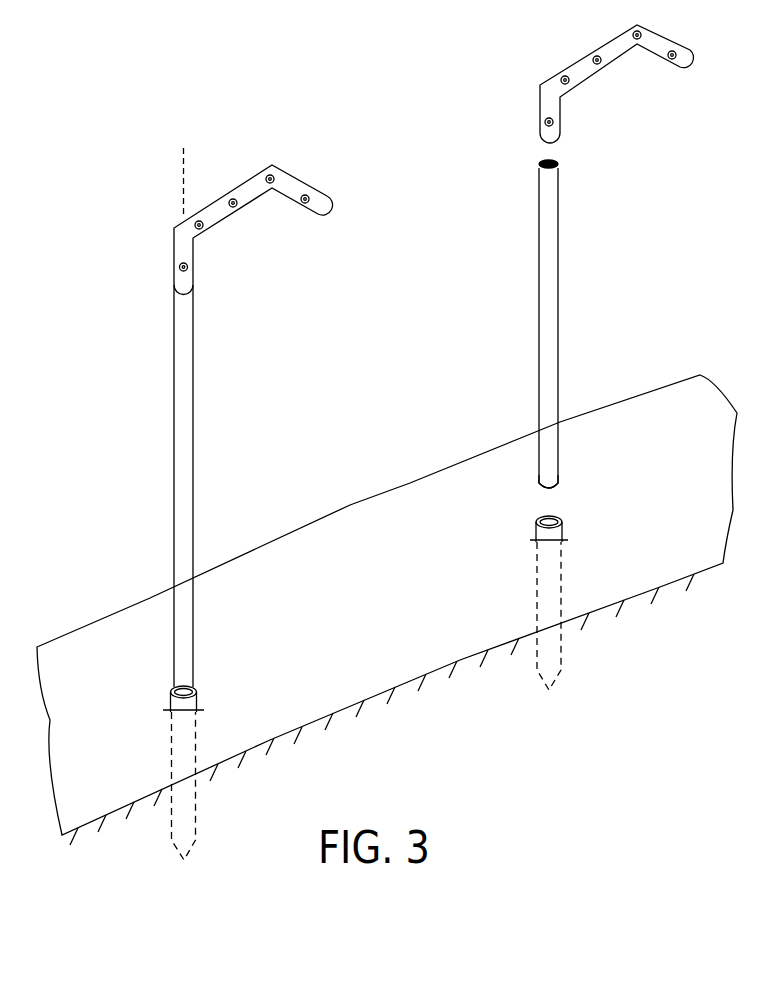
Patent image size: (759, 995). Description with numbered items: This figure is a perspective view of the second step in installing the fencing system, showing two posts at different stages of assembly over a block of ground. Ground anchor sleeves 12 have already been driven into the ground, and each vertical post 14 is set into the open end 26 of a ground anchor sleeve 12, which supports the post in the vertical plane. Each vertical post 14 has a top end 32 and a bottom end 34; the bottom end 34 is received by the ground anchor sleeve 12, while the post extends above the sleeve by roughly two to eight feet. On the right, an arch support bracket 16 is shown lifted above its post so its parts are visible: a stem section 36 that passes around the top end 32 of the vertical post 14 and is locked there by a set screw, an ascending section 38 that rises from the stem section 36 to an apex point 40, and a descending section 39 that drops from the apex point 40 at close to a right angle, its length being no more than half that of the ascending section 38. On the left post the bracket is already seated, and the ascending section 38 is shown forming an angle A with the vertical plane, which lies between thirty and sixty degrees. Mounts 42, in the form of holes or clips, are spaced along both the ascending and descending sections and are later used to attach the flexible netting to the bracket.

The ground anchor sleeve 12 is at (570, 642).
The vertical post 14 is at (556, 321).
The arch support bracket 16 is at (607, 74).
The open end 26 is at (557, 515).
The top end 32 is at (560, 163).
The bottom end 34 is at (540, 488).
The stem section 36 is at (540, 122).
The ascending section 38 is at (580, 58).
The descending section 39 is at (657, 55).
The apex point 40 is at (639, 25).
The mounts 42 is at (295, 200).
The angle A is at (234, 187).